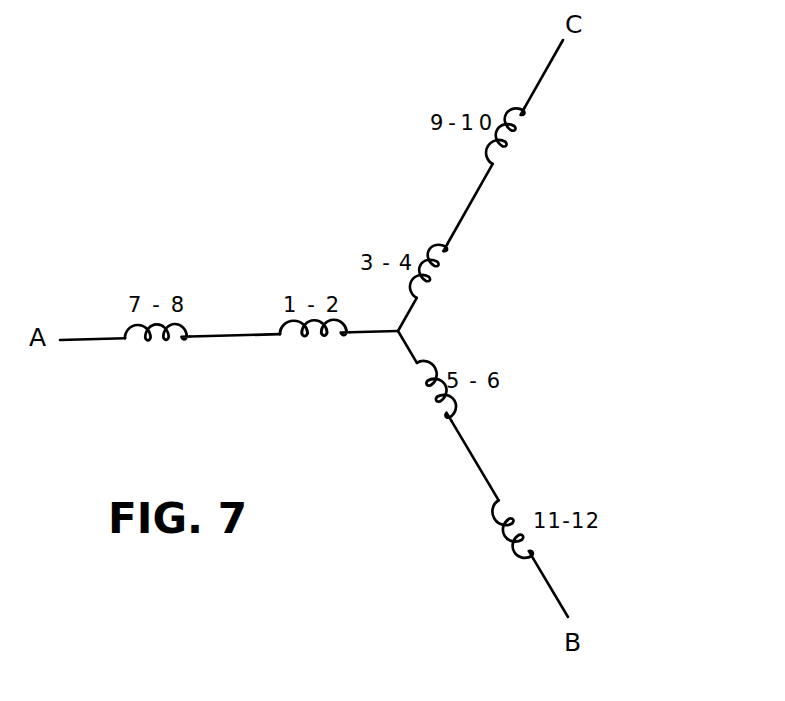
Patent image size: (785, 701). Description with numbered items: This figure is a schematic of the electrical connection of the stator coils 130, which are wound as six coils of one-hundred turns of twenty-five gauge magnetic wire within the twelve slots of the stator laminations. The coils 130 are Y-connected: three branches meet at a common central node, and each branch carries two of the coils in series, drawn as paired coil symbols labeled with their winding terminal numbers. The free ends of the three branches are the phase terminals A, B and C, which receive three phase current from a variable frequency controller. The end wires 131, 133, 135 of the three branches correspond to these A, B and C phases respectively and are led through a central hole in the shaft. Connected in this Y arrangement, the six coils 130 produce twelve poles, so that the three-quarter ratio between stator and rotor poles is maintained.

The coils 130 is at (150, 340).
The end wire 131 is at (61, 339).
The end wire 133 is at (566, 617).
The end wire 135 is at (563, 41).